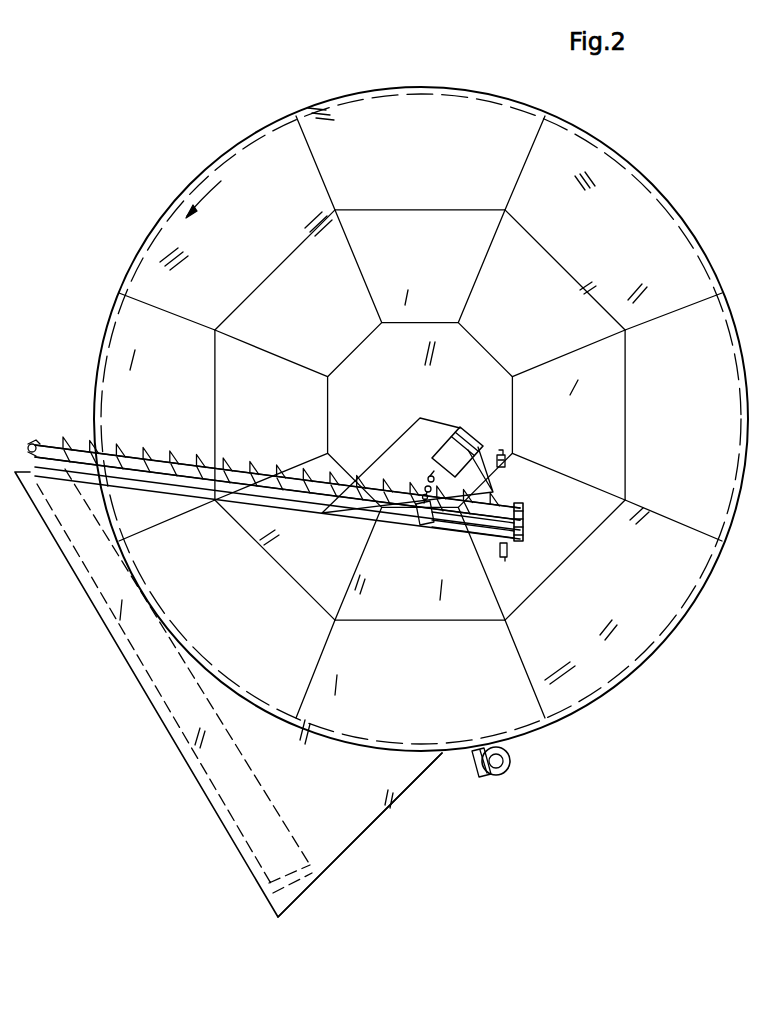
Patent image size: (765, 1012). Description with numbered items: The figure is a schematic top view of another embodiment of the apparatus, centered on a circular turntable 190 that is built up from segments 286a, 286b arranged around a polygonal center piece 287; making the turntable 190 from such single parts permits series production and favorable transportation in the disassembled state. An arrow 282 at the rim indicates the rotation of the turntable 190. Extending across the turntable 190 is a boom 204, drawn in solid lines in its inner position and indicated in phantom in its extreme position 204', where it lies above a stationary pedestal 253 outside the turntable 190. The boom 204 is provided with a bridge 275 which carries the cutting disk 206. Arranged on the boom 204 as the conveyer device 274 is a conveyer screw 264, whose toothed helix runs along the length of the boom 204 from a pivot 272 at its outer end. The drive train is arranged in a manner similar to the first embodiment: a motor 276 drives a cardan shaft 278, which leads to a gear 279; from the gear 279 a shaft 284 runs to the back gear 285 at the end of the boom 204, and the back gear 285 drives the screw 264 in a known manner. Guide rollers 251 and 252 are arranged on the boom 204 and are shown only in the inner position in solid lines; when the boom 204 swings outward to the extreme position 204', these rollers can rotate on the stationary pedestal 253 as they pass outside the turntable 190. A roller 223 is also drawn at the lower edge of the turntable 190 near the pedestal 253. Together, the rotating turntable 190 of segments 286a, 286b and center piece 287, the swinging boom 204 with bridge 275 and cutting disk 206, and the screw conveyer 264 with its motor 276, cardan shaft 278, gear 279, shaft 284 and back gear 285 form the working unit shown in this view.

The turntable 190 is at (243, 149).
The direction of rotation arrow 282 is at (206, 199).
The segment 286a is at (616, 242).
The segment 286b is at (548, 308).
The center piece 287 is at (428, 364).
The cutting disk 206 is at (450, 426).
The cardan shaft 278 is at (428, 485).
The motor 276 is at (482, 458).
The bridge 275 is at (376, 488).
The guide roller 251 is at (505, 468).
The pivot 272 is at (33, 442).
The conveyer screw 264 is at (164, 457).
The conveyer device 274 is at (244, 458).
The boom 204 is at (277, 492).
The gear 279 is at (419, 526).
The shaft 284 is at (470, 531).
The back gear 285 is at (524, 522).
The guide roller 252 is at (505, 561).
The extreme position of the boom 204' is at (228, 693).
The stationary pedestal 253 is at (372, 822).
The pulley 223 is at (510, 777).